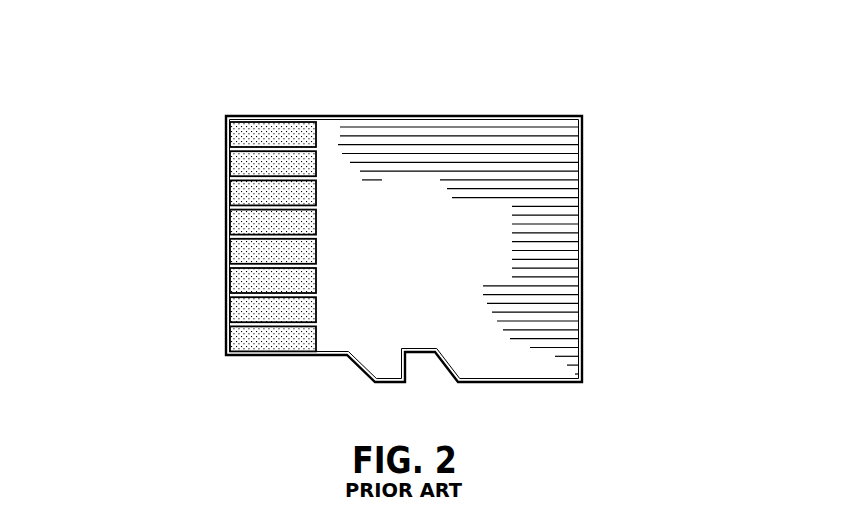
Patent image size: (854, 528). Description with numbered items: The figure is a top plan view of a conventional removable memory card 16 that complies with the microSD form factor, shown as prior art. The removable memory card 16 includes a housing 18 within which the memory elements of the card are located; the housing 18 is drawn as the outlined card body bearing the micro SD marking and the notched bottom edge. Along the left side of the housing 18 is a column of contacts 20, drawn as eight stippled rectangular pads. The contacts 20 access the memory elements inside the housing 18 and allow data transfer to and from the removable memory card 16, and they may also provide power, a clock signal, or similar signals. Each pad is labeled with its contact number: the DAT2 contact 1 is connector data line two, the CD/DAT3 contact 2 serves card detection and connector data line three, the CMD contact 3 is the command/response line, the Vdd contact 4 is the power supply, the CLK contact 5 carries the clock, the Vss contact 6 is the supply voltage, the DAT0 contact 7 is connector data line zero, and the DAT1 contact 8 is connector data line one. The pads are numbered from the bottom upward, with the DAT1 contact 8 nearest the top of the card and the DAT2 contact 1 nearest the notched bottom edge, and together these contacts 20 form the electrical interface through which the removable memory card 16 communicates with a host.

The removable memory card 16 is at (645, 206).
The housing 18 is at (500, 140).
The contacts 20 is at (201, 232).
The DAT2 contact 1 is at (283, 339).
The CD/DAT3 contact 2 is at (283, 310).
The CMD contact 3 is at (283, 281).
The Vdd contact 4 is at (283, 251).
The CLK contact 5 is at (283, 222).
The Vss contact 6 is at (283, 193).
The DAT0 contact 7 is at (283, 164).
The DAT1 contact 8 is at (283, 135).